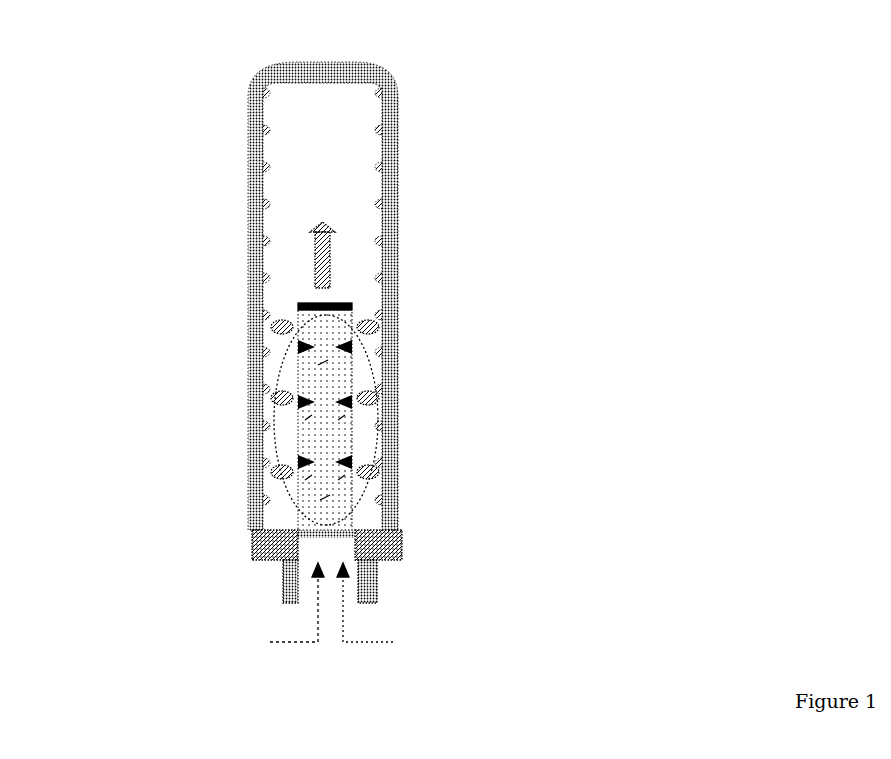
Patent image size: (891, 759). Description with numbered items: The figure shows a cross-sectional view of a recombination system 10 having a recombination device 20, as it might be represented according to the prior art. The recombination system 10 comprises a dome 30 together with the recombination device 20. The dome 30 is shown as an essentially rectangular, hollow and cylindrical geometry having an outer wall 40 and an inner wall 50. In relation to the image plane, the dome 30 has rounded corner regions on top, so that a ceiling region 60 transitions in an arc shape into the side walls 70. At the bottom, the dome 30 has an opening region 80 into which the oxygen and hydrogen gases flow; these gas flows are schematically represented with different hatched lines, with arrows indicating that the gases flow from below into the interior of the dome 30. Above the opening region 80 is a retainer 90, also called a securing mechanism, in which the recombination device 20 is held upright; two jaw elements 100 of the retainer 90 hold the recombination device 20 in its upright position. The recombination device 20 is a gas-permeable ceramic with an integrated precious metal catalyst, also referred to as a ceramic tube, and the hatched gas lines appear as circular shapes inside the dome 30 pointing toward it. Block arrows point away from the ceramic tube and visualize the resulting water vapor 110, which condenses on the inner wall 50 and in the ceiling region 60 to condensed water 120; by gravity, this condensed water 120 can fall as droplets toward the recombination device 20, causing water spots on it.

The recombination system 10 is at (117, 163).
The recombination device 20 is at (325, 365).
The dome 30 is at (395, 163).
The outer wall 40 is at (388, 75).
The inner wall 50 is at (342, 78).
The ceiling region 60 is at (305, 60).
The side walls 70 is at (257, 289).
The opening region 80 is at (313, 555).
The retainer 90 is at (327, 515).
The jaw elements 100 is at (298, 523).
The water vapor 110 is at (397, 322).
The condensed water 120 is at (397, 293).